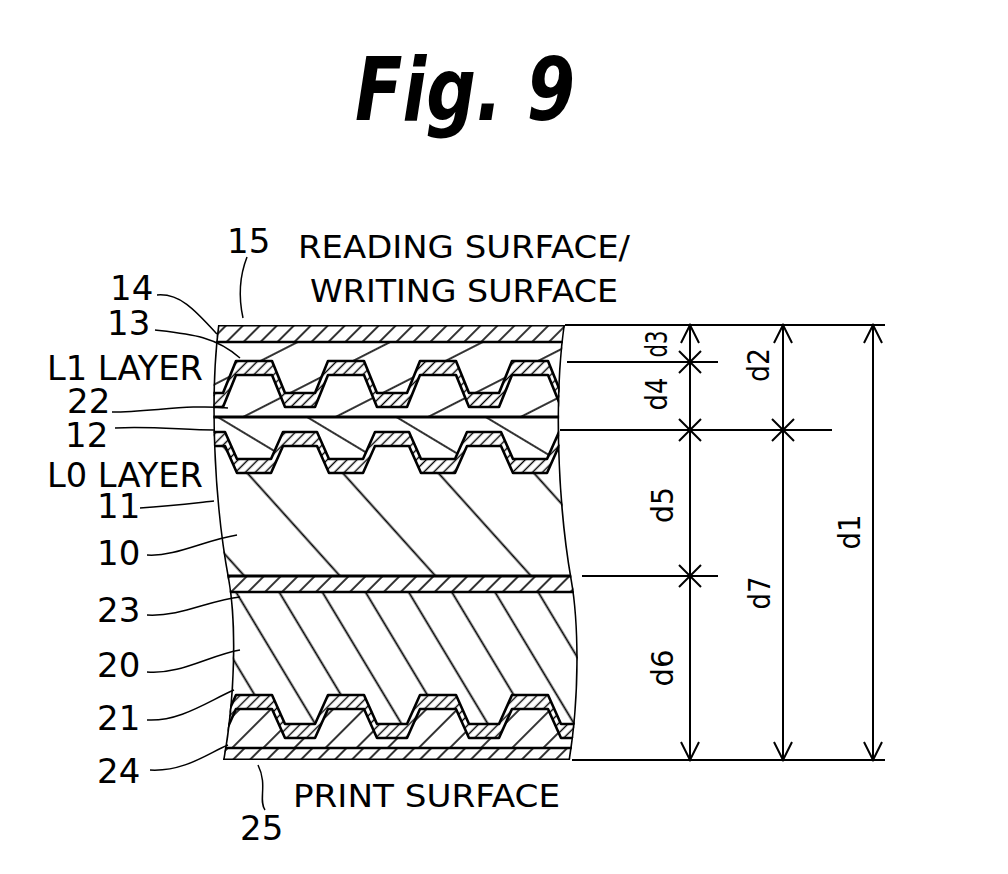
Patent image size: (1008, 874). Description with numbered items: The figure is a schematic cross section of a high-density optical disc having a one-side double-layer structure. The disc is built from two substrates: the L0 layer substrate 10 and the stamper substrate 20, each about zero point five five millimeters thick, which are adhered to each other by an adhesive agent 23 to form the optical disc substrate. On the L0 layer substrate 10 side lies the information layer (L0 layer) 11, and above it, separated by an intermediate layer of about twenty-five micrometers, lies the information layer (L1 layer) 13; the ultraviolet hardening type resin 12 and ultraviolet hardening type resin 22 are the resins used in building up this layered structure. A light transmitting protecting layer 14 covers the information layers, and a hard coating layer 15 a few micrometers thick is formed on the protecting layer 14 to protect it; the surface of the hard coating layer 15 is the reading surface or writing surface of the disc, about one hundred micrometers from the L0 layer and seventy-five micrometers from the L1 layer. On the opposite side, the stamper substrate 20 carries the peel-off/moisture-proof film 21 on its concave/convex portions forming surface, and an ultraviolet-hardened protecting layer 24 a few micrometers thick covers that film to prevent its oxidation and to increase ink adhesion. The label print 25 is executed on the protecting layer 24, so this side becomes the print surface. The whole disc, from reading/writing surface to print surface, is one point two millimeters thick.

The L0 layer substrate 10 is at (237, 535).
The information layer (L0 layer) 11 is at (250, 477).
The ultraviolet hardening type resin 12 is at (214, 430).
The information layer (L1 layer) 13 is at (240, 358).
The protecting layer 14 is at (217, 334).
The hard coating layer 15 is at (243, 318).
The stamper substrate 20 is at (240, 650).
The peel-off/moisture-proof film 21 is at (234, 690).
The ultraviolet hardening type resin 22 is at (228, 408).
The adhesive agent 23 is at (240, 597).
The protecting layer 24 is at (228, 745).
The label print 25 is at (258, 765).